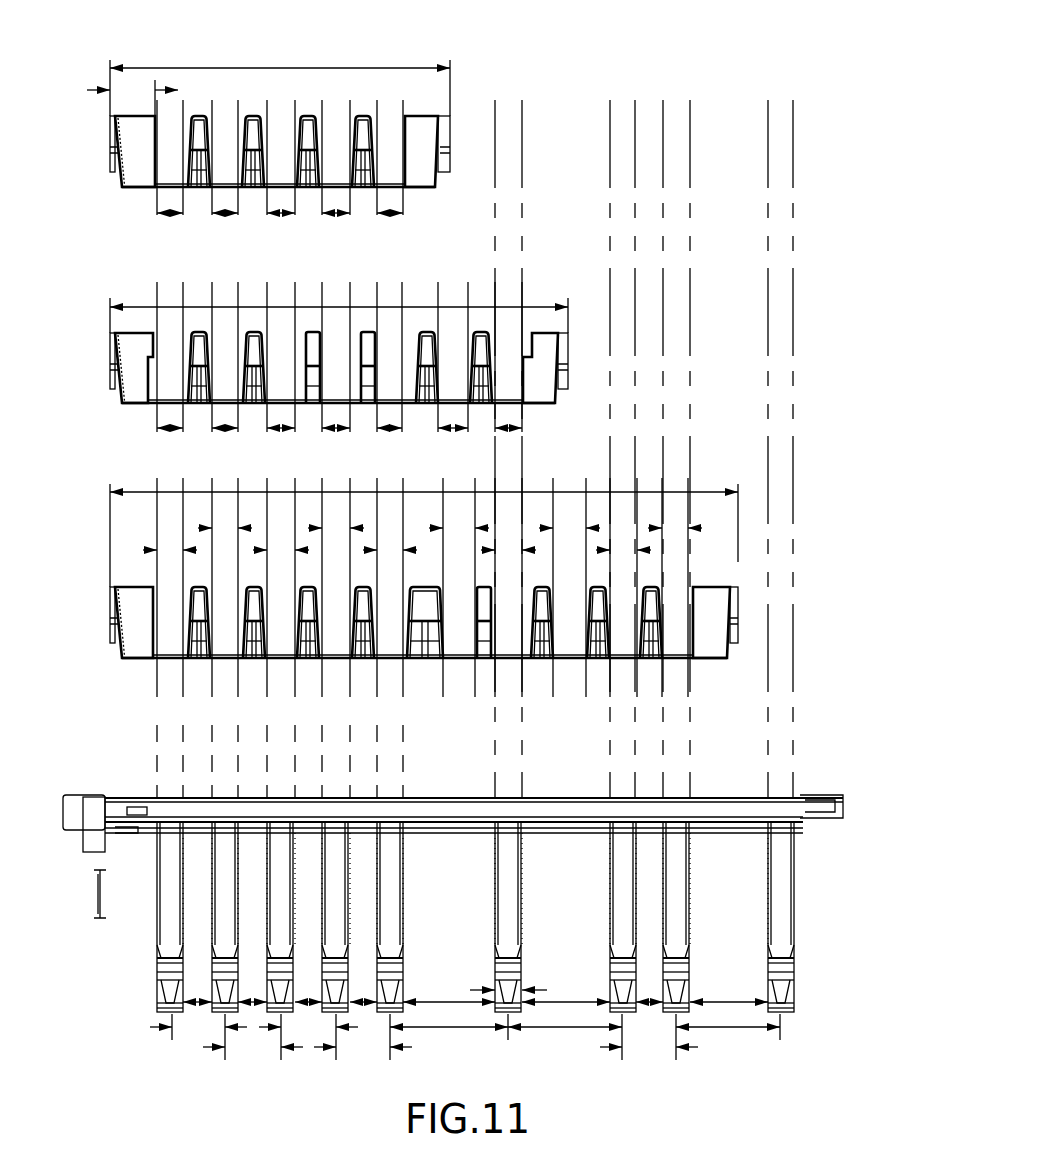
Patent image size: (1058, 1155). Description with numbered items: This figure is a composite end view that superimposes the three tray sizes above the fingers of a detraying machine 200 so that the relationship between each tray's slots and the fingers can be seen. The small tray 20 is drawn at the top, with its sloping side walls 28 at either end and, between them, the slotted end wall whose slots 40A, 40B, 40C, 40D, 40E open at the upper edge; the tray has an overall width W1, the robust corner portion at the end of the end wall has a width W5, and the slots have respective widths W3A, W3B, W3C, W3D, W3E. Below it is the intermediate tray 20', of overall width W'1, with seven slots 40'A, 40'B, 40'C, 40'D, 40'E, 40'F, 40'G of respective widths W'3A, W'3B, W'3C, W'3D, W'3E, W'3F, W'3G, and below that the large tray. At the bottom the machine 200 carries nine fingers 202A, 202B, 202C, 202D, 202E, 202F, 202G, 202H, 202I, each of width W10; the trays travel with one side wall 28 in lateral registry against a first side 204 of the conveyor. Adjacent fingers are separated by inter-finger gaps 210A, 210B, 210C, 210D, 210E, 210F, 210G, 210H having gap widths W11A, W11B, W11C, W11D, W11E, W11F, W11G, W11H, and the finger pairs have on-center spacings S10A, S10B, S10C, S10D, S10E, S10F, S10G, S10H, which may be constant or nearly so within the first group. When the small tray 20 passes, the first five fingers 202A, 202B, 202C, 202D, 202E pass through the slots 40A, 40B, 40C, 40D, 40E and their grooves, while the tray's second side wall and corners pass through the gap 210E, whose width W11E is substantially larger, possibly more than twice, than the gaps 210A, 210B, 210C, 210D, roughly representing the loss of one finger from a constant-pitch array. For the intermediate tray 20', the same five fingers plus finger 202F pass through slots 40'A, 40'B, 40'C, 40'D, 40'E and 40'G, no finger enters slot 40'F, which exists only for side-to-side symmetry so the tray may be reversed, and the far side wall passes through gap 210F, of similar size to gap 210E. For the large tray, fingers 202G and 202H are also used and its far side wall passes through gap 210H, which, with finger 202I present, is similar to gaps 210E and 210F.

The tray 20 is at (246, 160).
The side wall 28 is at (110, 127).
The slot 40A is at (171, 132).
The slot 40B is at (226, 132).
The slot 40C is at (281, 132).
The slot 40D is at (336, 132).
The slot 40E is at (390, 132).
The overall width W1 is at (280, 73).
The terminal portion width W5 is at (132, 98).
The slot width W3A is at (170, 228).
The slot width W3B is at (225, 228).
The slot width W3C is at (281, 228).
The slot width W3D is at (336, 228).
The slot width W3E is at (390, 228).
The tray 20' is at (304, 377).
The overall width W'1 is at (339, 303).
The slot 40'A is at (171, 345).
The slot 40'B is at (226, 345).
The slot 40'C is at (282, 345).
The slot 40'D is at (337, 345).
The slot 40'E is at (392, 345).
The slot 40'F is at (452, 345).
The slot 40'G is at (508, 345).
The slot width W'3A is at (170, 444).
The slot width W'3B is at (225, 444).
The slot width W'3C is at (281, 444).
The slot width W'3D is at (336, 444).
The slot width W'3E is at (389, 444).
The slot width W'3F is at (453, 444).
The slot width W'3G is at (508, 444).
The detraying machine 200 is at (450, 909).
The first side of conveyor 204 is at (102, 895).
The finger 202A is at (228, 921).
The finger 202B is at (170, 921).
The finger 202C is at (283, 898).
The finger 202D is at (345, 906).
The finger 202E is at (390, 927).
The finger 202F is at (505, 870).
The finger 202G is at (623, 897).
The finger 202H is at (673, 868).
The finger 202I is at (780, 897).
The inter-finger gap 210A is at (198, 862).
The inter-finger gap 210B is at (253, 862).
The inter-finger gap 210C is at (309, 862).
The inter-finger gap 210D is at (364, 862).
The inter-finger gap 210E is at (485, 941).
The inter-finger gap 210F is at (597, 941).
The inter-finger gap 210G is at (650, 912).
The inter-finger gap 210H is at (755, 941).
The finger width W10 is at (540, 988).
The gap width W11A is at (196, 1000).
The gap width W11B is at (250, 1000).
The gap width W11C is at (306, 1000).
The gap width W11D is at (365, 1000).
The gap width W11E is at (442, 1000).
The gap width W11F is at (567, 1000).
The gap width W11G is at (648, 1000).
The gap width W11H is at (725, 1000).
The on-center finger spacing S10A is at (198, 1036).
The on-center finger spacing S10B is at (253, 1038).
The on-center finger spacing S10C is at (308, 1036).
The on-center finger spacing S10D is at (363, 1038).
The on-center finger spacing S10E is at (449, 1026).
The on-center finger spacing S10F is at (565, 1036).
The on-center finger spacing S10G is at (649, 1038).
The on-center finger spacing S10H is at (728, 1026).